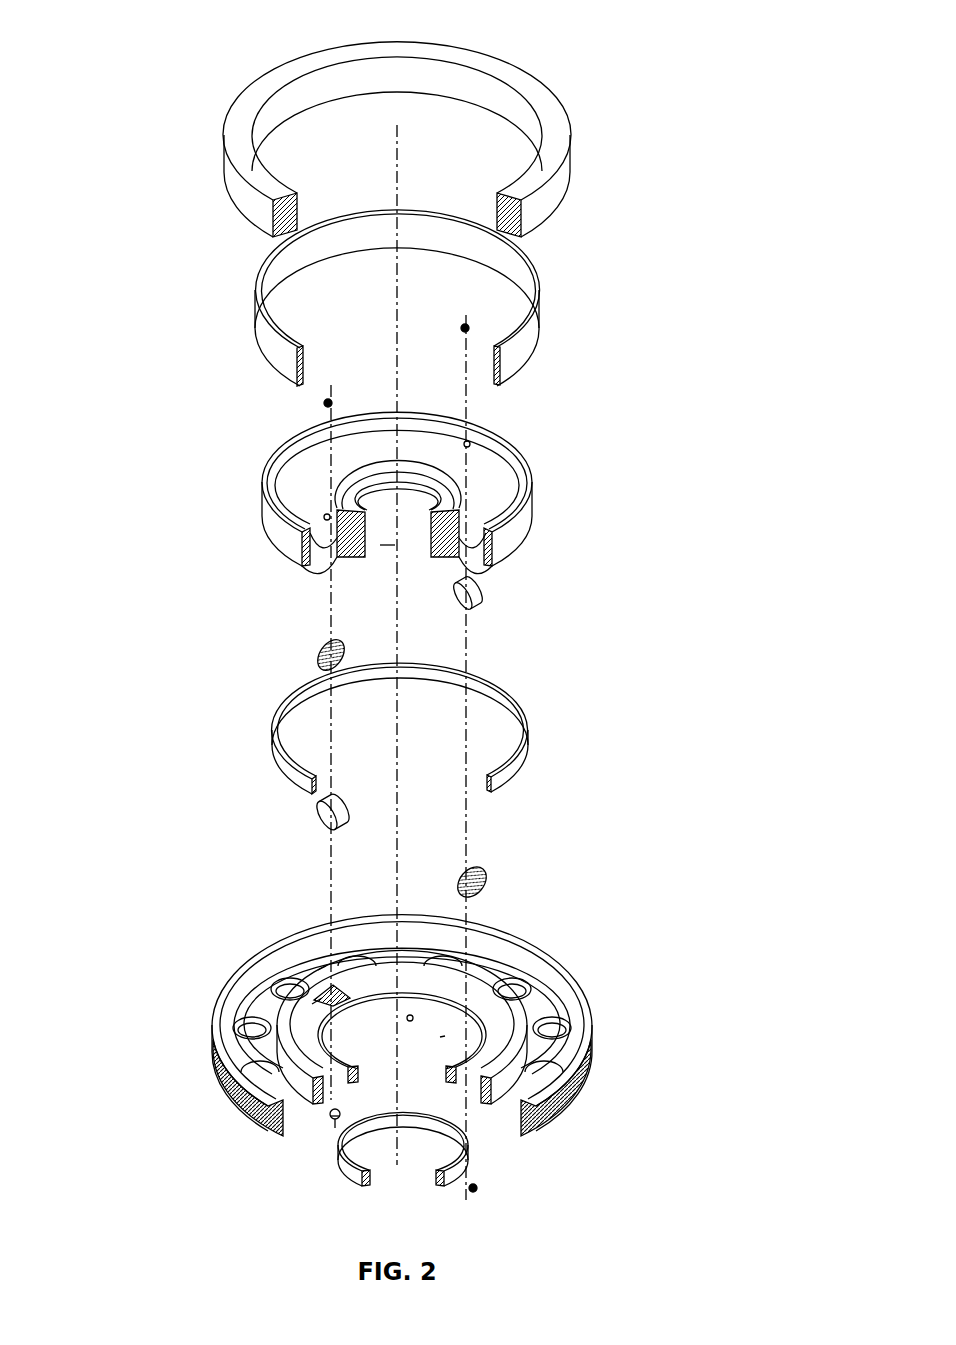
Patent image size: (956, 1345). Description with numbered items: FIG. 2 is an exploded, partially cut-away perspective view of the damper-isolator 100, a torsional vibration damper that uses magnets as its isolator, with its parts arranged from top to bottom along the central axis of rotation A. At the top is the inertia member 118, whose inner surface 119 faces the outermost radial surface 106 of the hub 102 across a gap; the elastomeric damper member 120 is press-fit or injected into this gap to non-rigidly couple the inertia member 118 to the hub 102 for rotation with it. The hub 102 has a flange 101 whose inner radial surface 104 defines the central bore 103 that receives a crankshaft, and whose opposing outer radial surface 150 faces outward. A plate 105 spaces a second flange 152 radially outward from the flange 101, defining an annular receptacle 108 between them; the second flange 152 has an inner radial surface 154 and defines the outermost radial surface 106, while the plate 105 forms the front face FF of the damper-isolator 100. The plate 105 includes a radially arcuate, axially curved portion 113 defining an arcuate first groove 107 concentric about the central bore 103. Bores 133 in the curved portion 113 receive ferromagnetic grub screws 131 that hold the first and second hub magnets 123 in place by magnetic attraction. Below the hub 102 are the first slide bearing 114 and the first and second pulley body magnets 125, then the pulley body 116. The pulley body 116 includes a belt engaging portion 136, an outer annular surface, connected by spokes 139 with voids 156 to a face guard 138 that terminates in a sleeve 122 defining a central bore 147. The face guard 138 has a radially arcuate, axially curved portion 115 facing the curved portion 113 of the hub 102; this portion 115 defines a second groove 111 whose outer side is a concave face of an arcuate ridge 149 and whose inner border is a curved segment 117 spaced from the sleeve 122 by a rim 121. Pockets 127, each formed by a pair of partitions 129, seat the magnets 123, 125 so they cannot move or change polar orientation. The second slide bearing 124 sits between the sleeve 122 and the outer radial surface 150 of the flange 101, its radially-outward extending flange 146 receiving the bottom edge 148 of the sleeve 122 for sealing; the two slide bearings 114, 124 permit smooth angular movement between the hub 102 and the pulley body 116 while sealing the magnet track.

The damper-isolator 100 is at (143, 76).
The central axis of rotation A is at (398, 190).
The inertia member 118 is at (556, 190).
The inner surface 119 is at (470, 85).
The elastomeric damper member 120 is at (541, 335).
The grub screws 131 is at (325, 401).
The hub 102 is at (411, 538).
The plate 105 is at (483, 450).
The outermost radial surface 106 is at (518, 538).
The front face FF is at (528, 473).
The radially arcuate, axially curved portion 113 is at (368, 472).
The inner radial surface 104 is at (408, 514).
The bores 133 is at (322, 532).
The annular receptacle 108 is at (306, 565).
The outer radial surface 150 is at (494, 553).
The flange 101 is at (350, 558).
The inner radial surface 154 is at (473, 560).
The second flange 152 is at (488, 570).
The first groove 107 is at (323, 562).
The central bore 103 is at (393, 552).
The hub magnets 123 is at (480, 600).
The first slide bearing 114 is at (526, 756).
The pulley body magnets 125 is at (322, 818).
The pulley body 116 is at (409, 1025).
The voids 156 is at (553, 960).
The arcuate, curvilinear ridge 149 is at (576, 981).
The second groove 111 is at (580, 1010).
The bottom edge 148 is at (250, 1013).
The belt engaging portion 136 is at (214, 1068).
The rim 121 is at (343, 1038).
The radially arcuate, axially curved portion 115 is at (342, 1079).
The curved segment 117 is at (458, 1082).
The sleeve 122 is at (410, 1014).
The central bore 147 is at (440, 1037).
The spokes 139 is at (318, 967).
The pockets 127 is at (330, 990).
The partitions 129 is at (313, 1006).
The face guard 138 is at (315, 1100).
The radially-outward extending flange 146 is at (433, 1184).
The second slide bearing 124 is at (466, 1162).